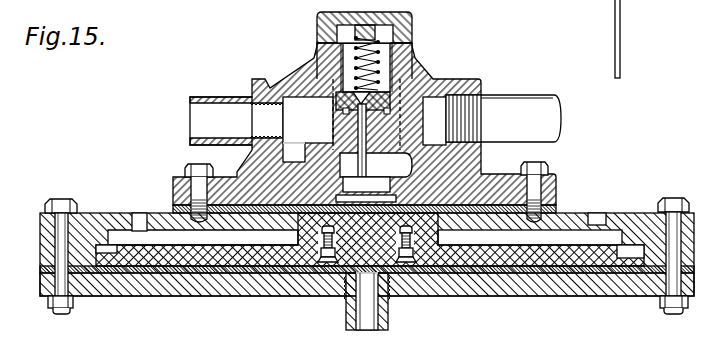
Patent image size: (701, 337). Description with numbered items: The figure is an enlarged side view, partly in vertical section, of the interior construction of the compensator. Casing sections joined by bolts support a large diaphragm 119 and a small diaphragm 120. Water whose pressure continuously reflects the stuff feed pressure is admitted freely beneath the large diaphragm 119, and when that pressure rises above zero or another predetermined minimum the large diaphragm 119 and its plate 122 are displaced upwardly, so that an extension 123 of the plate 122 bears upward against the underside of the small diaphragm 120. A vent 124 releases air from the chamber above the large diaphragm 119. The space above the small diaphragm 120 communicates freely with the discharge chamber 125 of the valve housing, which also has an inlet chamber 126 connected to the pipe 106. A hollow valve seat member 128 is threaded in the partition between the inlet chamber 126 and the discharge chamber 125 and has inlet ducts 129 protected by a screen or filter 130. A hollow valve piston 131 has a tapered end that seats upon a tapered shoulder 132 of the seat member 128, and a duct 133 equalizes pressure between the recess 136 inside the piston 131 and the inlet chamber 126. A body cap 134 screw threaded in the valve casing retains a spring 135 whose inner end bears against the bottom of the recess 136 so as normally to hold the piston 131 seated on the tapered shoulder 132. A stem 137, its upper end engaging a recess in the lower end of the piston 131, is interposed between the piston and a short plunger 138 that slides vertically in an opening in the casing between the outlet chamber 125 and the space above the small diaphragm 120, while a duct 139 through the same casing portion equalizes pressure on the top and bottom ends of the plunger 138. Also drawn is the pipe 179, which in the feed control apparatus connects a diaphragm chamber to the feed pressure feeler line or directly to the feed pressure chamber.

The pipe 106 is at (207, 97).
The large diaphragm 119 is at (91, 272).
The small diaphragm 120 is at (176, 204).
The plate 122 is at (237, 255).
The extension 123 is at (382, 228).
The vent 124 is at (139, 228).
The discharge chamber 125 is at (421, 179).
The inlet chamber 126 is at (308, 129).
The hollow valve seat member 128 is at (404, 80).
The inlet ducts 129 is at (343, 112).
The screen or filter 130 is at (332, 90).
The hollow valve piston 131 is at (317, 42).
The tapered shoulder 132 is at (393, 121).
The duct 133 is at (343, 103).
The body cap 134 is at (413, 18).
The spring 135 is at (352, 33).
The recess 136 is at (413, 44).
The stem 137 is at (366, 160).
The short plunger 138 is at (366, 185).
The duct 139 is at (468, 163).
The pipe 179 is at (617, 33).